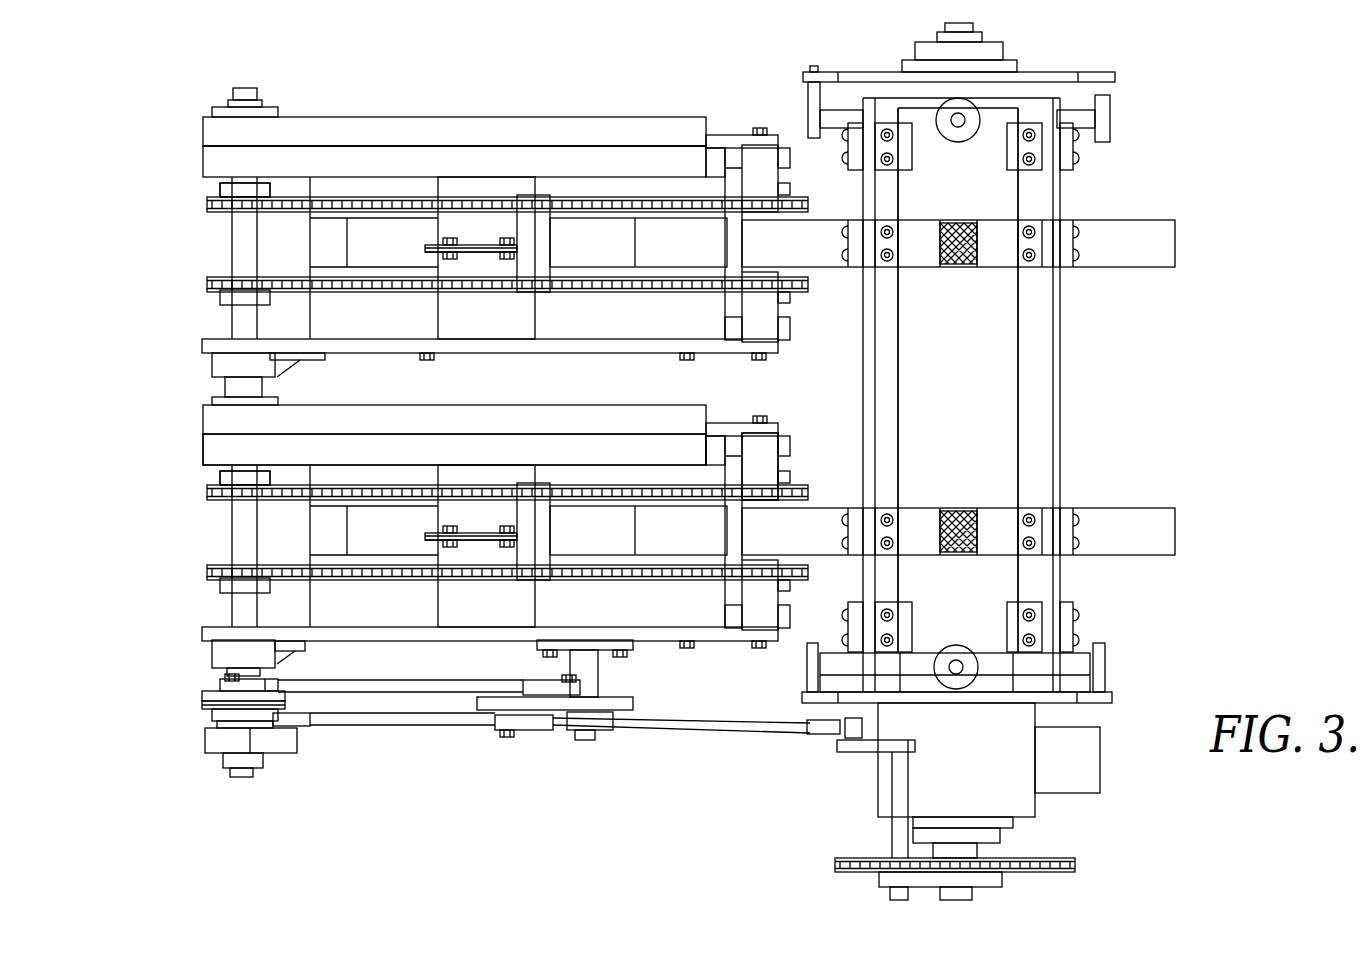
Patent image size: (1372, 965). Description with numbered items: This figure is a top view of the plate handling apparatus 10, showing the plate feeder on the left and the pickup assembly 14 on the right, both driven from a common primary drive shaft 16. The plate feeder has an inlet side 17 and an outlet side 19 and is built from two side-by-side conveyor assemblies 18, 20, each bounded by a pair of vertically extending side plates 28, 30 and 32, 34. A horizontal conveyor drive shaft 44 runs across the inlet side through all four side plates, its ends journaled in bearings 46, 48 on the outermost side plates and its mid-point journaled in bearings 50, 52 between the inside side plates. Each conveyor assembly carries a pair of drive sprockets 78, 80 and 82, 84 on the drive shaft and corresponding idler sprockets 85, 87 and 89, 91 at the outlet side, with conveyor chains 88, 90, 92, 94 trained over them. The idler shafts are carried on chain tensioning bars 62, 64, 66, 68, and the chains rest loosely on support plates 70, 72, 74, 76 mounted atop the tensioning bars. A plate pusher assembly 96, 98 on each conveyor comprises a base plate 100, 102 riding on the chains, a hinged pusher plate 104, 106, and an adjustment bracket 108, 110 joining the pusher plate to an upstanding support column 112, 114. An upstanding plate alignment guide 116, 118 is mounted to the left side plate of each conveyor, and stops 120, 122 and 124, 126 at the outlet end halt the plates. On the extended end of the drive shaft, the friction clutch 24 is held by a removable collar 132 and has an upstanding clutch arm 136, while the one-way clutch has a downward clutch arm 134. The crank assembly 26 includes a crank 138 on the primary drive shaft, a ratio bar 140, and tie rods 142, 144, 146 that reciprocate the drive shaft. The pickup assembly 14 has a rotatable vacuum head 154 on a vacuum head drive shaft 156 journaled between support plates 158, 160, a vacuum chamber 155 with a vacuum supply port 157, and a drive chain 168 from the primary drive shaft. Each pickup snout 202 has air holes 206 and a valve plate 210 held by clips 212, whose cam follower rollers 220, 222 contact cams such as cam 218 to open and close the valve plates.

The plate handling apparatus 10 is at (1022, 461).
The pickup assembly 14 is at (998, 461).
The primary drive shaft 16 is at (905, 792).
The inlet side 17 is at (203, 371).
The conveyor assembly 18 is at (172, 527).
The outlet side 19 is at (790, 395).
The conveyor assembly 20 is at (175, 265).
The friction clutch 24 is at (205, 706).
The crank assembly 26 is at (488, 732).
The side plate 28 is at (730, 642).
The side plate 30 is at (720, 428).
The side plate 32 is at (720, 348).
The side plate 34 is at (735, 140).
The conveyor drive shaft 44 is at (245, 90).
The bearing 46 is at (215, 652).
The bearing 48 is at (255, 107).
The bearing 50 is at (270, 398).
The bearing 52 is at (215, 366).
The chain tensioning bar 62 is at (790, 618).
The chain tensioning bar 64 is at (790, 446).
The chain tensioning bar 66 is at (727, 325).
The chain tensioning bar 68 is at (790, 158).
The support plate 70 is at (630, 578).
The support plate 72 is at (600, 475).
The support plate 74 is at (600, 325).
The support plate 76 is at (585, 185).
The drive sprocket 78 is at (225, 590).
The drive sprocket 80 is at (225, 478).
The drive sprocket 82 is at (225, 300).
The drive sprocket 84 is at (225, 190).
The idler sprocket 85 is at (790, 585).
The idler sprocket 87 is at (790, 478).
The conveyor chain 88 is at (300, 556).
The idler sprocket 89 is at (790, 297).
The conveyor chain 90 is at (285, 500).
The idler sprocket 91 is at (790, 190).
The conveyor chain 92 is at (300, 270).
The conveyor chain 94 is at (295, 215).
The plate pusher assembly 96 is at (425, 522).
The plate pusher assembly 98 is at (425, 234).
The base plate 100 is at (440, 612).
The base plate 102 is at (440, 322).
The pusher plate 104 is at (545, 536).
The pusher plate 106 is at (545, 256).
The adjustment bracket 108 is at (478, 545).
The adjustment bracket 110 is at (478, 255).
The support column 112 is at (450, 528).
The support column 114 is at (450, 240).
The plate alignment guide 116 is at (375, 448).
The plate alignment guide 118 is at (525, 160).
The stop 120 is at (745, 615).
The stop 122 is at (750, 465).
The stop 124 is at (790, 330).
The stop 126 is at (750, 177).
The collar 132 is at (225, 762).
The clutch arm 134 is at (290, 745).
The clutch arm 136 is at (215, 690).
The crank 138 is at (848, 755).
The ratio bar 140 is at (625, 700).
The tie rod 142 is at (700, 728).
The tie rod 144 is at (420, 722).
The tie rod 146 is at (425, 685).
The vacuum head 154 is at (1045, 447).
The vacuum chamber 155 is at (1010, 800).
The vacuum head drive shaft 156 is at (945, 28).
The vacuum supply port 157 is at (1092, 766).
The support plate 158 is at (1112, 698).
The support plate 160 is at (1063, 78).
The drive chain 168 is at (855, 860).
The pickup snout 202 is at (1165, 247).
The air holes 206 is at (960, 267).
The valve plate 210 is at (1010, 385).
The clip 212 is at (900, 172).
The cam 218 is at (812, 68).
The cam follower roller 220 is at (808, 662).
The cam follower roller 222 is at (818, 120).